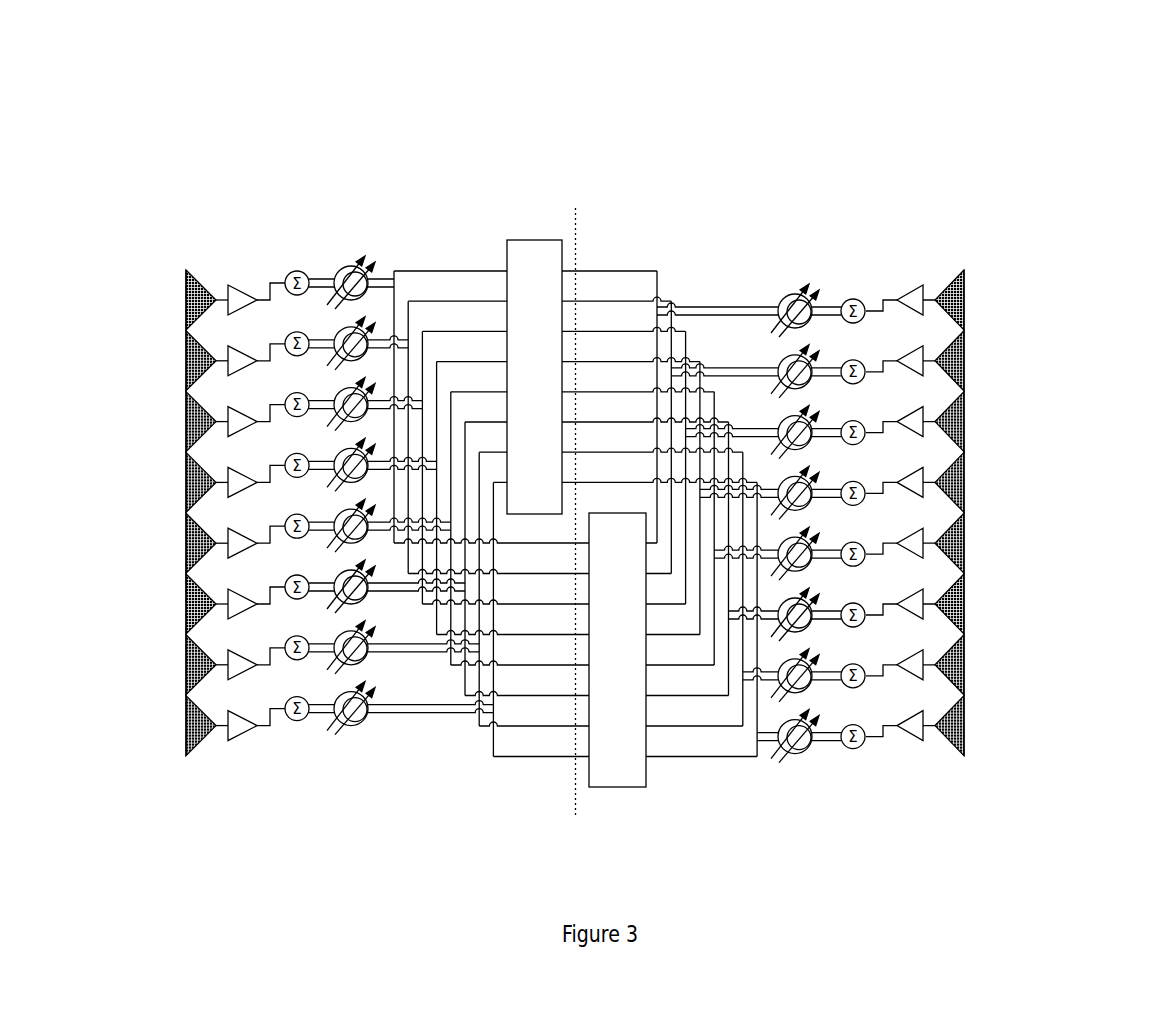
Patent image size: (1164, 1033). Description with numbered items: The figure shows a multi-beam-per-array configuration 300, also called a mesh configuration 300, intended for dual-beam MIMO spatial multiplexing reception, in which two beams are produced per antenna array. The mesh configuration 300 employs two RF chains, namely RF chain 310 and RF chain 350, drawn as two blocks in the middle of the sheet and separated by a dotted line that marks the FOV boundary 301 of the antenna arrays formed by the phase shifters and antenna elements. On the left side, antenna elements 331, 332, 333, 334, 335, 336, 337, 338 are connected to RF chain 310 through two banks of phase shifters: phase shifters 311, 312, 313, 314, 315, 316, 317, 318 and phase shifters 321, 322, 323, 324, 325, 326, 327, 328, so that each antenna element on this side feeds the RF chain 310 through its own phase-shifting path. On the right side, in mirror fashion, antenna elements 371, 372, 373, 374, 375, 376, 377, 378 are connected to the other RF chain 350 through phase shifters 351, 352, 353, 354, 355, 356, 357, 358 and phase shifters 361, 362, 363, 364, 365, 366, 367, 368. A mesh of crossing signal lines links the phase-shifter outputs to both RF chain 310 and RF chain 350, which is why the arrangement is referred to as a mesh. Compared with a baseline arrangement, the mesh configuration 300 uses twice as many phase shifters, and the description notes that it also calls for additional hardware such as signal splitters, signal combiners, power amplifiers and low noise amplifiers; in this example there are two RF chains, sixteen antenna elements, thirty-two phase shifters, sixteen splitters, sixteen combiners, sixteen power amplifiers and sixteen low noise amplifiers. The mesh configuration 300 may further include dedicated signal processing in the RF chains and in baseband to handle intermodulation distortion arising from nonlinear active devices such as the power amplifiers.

The multi-beam-per-array configuration 300 is at (1013, 100).
The FOV boundary 301 is at (578, 502).
The RF chain 310 is at (534, 322).
The RF chain 350 is at (617, 692).
The phase shifter 311 is at (311, 267).
The phase shifter 312 is at (311, 331).
The phase shifter 313 is at (311, 391).
The phase shifter 314 is at (311, 453).
The phase shifter 315 is at (311, 515).
The phase shifter 316 is at (311, 576).
The phase shifter 317 is at (311, 636).
The phase shifter 318 is at (311, 697).
The phase shifter 321 is at (368, 274).
The phase shifter 322 is at (366, 338).
The phase shifter 323 is at (365, 398).
The phase shifter 324 is at (364, 460).
The phase shifter 325 is at (361, 522).
The phase shifter 326 is at (368, 583).
The phase shifter 327 is at (369, 643).
The phase shifter 328 is at (368, 704).
The antenna element 331 is at (175, 300).
The antenna element 332 is at (175, 361).
The antenna element 333 is at (175, 422).
The antenna element 334 is at (175, 482).
The antenna element 335 is at (175, 543).
The antenna element 336 is at (175, 604).
The antenna element 337 is at (175, 665).
The antenna element 338 is at (175, 726).
The phase shifter 351 is at (774, 304).
The phase shifter 352 is at (777, 365).
The phase shifter 353 is at (779, 426).
The phase shifter 354 is at (782, 486).
The phase shifter 355 is at (784, 547).
The phase shifter 356 is at (786, 608).
The phase shifter 357 is at (787, 669).
The phase shifter 358 is at (787, 730).
The phase shifter 361 is at (851, 297).
The phase shifter 362 is at (851, 358).
The phase shifter 363 is at (851, 419).
The phase shifter 364 is at (851, 479).
The phase shifter 365 is at (851, 540).
The phase shifter 366 is at (851, 601).
The phase shifter 367 is at (851, 662).
The phase shifter 368 is at (851, 723).
The antenna element 371 is at (976, 300).
The antenna element 372 is at (976, 361).
The antenna element 373 is at (976, 422).
The antenna element 374 is at (976, 482).
The antenna element 375 is at (976, 543).
The antenna element 376 is at (976, 604).
The antenna element 377 is at (976, 665).
The antenna element 378 is at (976, 726).